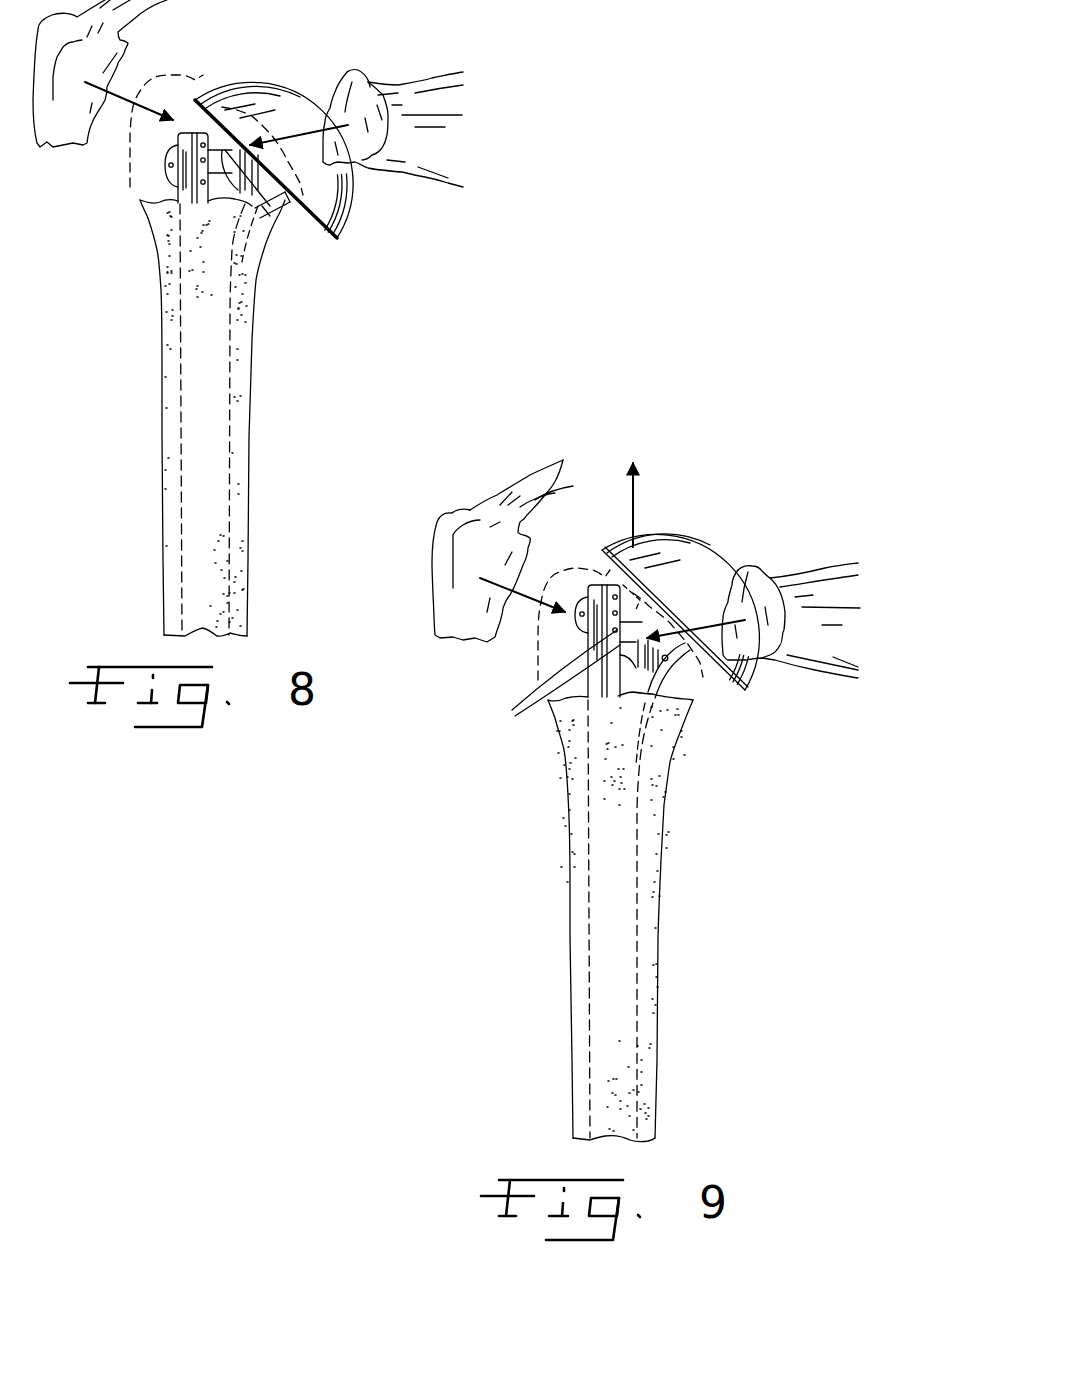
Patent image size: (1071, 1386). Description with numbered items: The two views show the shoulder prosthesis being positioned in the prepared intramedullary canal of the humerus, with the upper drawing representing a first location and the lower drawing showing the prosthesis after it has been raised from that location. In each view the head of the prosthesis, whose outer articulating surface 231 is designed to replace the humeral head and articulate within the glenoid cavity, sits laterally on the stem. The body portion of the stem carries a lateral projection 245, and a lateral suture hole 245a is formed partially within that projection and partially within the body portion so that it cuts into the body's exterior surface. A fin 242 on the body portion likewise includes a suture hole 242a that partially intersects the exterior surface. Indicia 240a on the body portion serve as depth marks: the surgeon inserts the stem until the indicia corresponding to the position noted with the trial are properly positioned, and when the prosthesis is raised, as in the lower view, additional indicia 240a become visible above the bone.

In FIG. 8, the articulating surface 231 is at (306, 97).
In FIG. 9, the articulating surface 231 is at (720, 556).
In FIG. 8, the lateral projection 245 is at (167, 152).
In FIG. 9, the lateral projection 245 is at (580, 602).
In FIG. 8, the lateral suture hole 245a is at (170, 168).
In FIG. 9, the lateral suture hole 245a is at (578, 620).
In FIG. 8, the indicia 240a is at (270, 206).
In FIG. 9, the indicia 240a is at (544, 688).
In FIG. 9, the fin 242 is at (698, 690).
In FIG. 9, the suture hole 242a is at (661, 675).